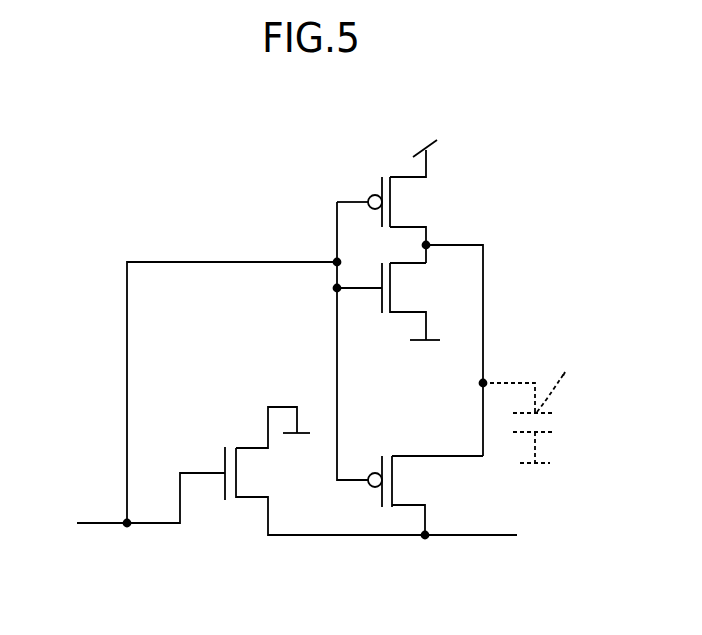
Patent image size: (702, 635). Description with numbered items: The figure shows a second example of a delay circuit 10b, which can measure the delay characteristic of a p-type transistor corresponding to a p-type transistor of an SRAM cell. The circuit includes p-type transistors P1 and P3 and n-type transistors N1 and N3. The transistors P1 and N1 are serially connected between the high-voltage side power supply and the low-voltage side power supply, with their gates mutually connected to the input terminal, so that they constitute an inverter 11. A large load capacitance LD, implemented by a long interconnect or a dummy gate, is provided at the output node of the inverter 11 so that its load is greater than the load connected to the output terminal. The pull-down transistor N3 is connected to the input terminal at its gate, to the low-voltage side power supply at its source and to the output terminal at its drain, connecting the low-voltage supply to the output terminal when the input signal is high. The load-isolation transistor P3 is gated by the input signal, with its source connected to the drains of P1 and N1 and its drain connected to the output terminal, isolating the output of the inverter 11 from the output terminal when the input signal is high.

The delay circuit 10b is at (130, 208).
The inverter 11 is at (346, 174).
The p-type transistor P1 is at (397, 186).
The n-type transistor N1 is at (396, 318).
The pull-down transistor N3 is at (371, 471).
The load-isolation transistor P3 is at (425, 497).
The load capacitance LD is at (533, 403).